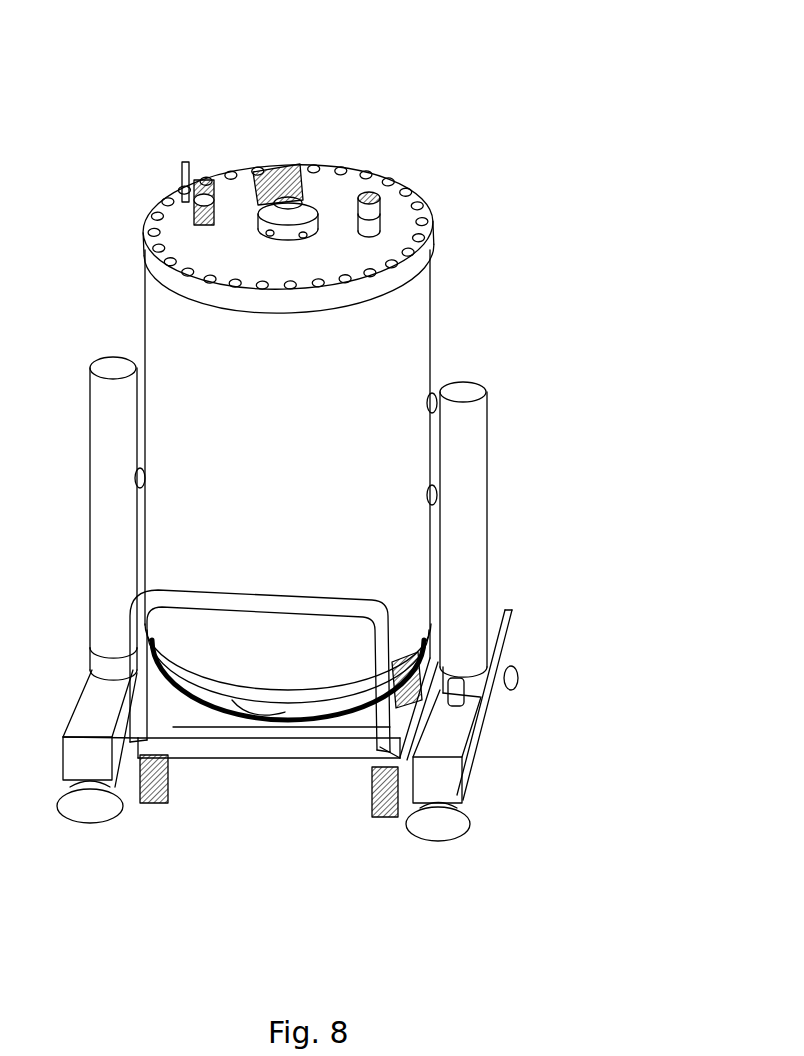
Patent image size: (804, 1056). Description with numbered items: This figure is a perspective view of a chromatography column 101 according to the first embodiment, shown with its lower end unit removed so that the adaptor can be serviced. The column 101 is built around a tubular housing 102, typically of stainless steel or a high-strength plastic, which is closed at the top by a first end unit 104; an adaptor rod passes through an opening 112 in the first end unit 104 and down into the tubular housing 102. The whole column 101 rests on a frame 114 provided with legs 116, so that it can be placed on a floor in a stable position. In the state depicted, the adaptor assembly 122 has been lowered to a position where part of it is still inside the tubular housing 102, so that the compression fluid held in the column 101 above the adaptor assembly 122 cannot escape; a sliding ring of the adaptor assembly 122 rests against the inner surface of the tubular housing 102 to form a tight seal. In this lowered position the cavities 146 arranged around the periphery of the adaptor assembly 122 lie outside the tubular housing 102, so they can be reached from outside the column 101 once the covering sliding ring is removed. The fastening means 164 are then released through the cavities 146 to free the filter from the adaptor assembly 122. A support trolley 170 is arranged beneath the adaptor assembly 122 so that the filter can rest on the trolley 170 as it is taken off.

The chromatography column 101 is at (410, 64).
The tubular housing 102 is at (433, 300).
The first end unit 104 is at (434, 232).
The opening 112 is at (262, 186).
The frame 114 is at (477, 463).
The legs 116 is at (477, 615).
The adaptor assembly 122 is at (232, 690).
The cavities 146 is at (252, 723).
The fastening means 164 is at (317, 723).
The support trolley 170 is at (347, 757).